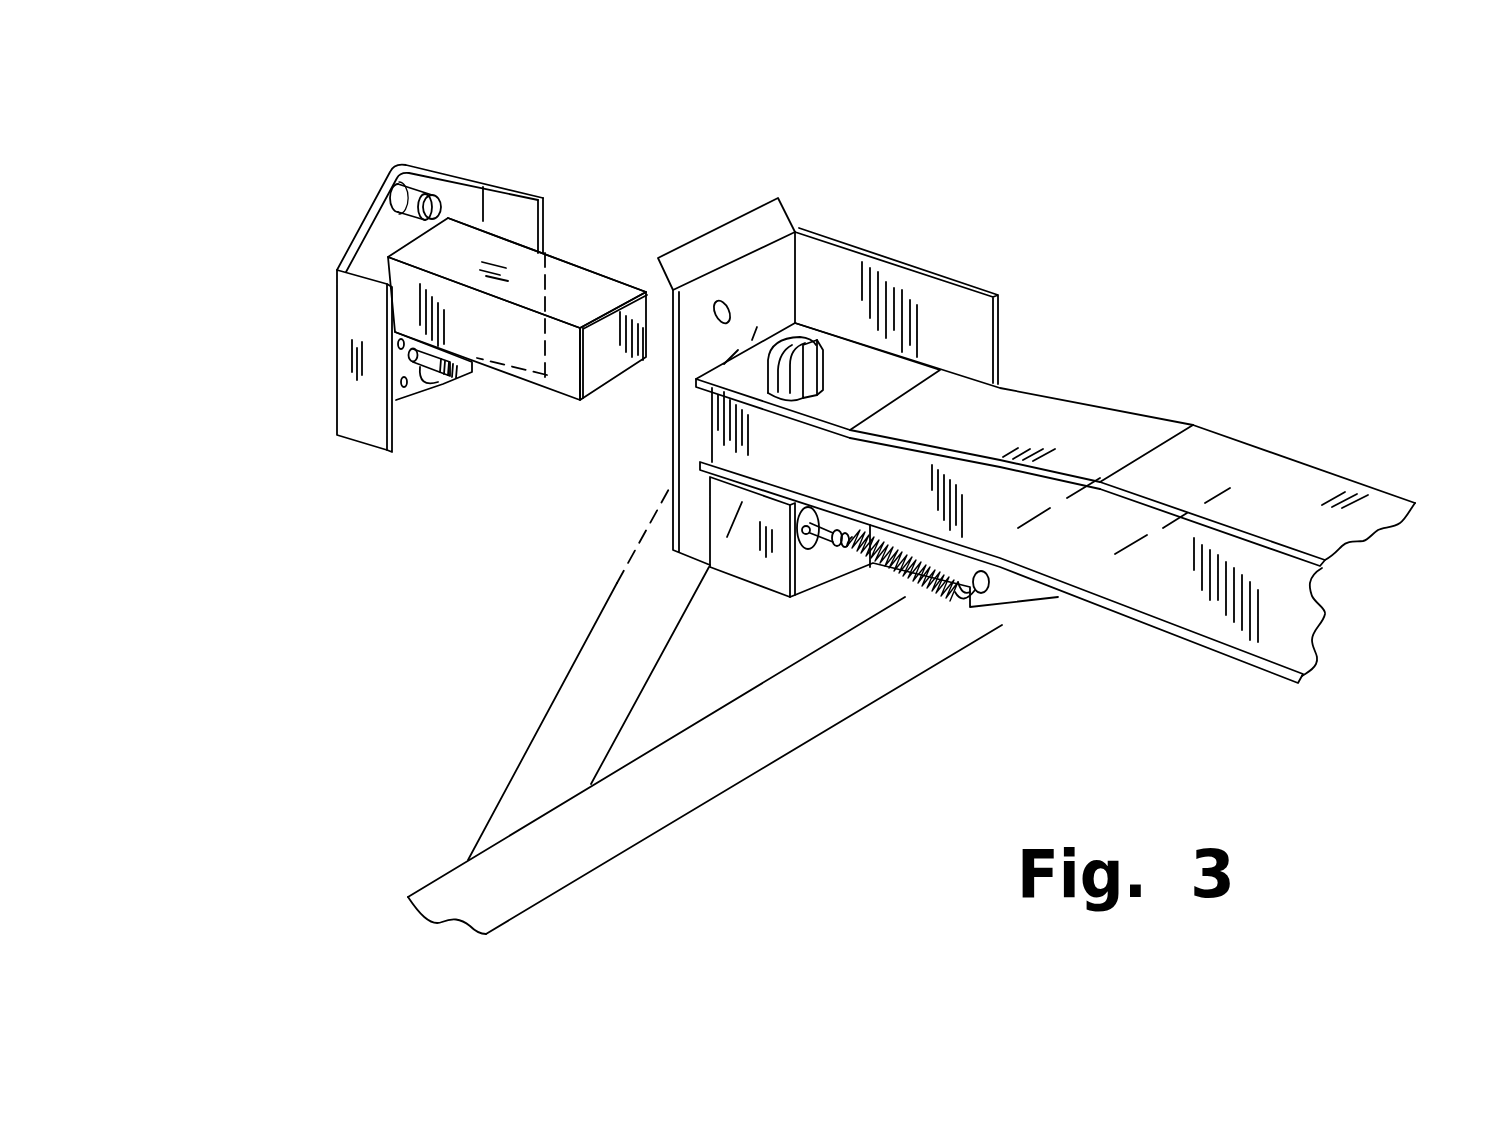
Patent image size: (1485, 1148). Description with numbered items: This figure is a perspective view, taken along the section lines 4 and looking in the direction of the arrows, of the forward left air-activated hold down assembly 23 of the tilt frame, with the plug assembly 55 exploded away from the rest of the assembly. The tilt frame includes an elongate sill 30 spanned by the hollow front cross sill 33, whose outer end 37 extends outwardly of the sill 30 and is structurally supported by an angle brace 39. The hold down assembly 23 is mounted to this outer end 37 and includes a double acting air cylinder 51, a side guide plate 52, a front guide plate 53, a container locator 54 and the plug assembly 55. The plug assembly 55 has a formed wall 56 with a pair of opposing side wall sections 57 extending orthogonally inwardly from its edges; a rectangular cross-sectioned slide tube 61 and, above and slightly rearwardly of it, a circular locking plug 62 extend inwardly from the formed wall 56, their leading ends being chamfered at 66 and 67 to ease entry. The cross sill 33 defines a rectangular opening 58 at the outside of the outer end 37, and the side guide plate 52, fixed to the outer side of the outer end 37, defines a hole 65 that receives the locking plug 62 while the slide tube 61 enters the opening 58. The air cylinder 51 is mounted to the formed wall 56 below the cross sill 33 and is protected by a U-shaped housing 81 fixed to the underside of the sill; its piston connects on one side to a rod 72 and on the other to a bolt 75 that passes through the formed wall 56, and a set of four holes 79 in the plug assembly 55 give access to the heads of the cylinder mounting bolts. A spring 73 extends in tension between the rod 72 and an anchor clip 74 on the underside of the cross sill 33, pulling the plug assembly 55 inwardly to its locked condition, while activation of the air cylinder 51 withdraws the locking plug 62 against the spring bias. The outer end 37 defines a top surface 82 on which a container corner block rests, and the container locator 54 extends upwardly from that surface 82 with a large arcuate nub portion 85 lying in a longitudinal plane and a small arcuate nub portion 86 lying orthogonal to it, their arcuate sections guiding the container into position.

The section lines 4— 4 is at (270, 195).
The air-activated hold down assembly 23 is at (819, 174).
The sill 30 is at (712, 803).
The front cross sill 33 is at (1257, 443).
The outer end of front cross sill 37 is at (927, 380).
The angle brace 39 is at (552, 700).
The double acting air cylinder 51 is at (793, 596).
The side guide plate 52 is at (668, 420).
The front guide plate 53 is at (1000, 342).
The container locator 54 is at (805, 333).
The plug assembly 55 is at (328, 408).
The formed wall 56 is at (468, 188).
The side wall sections 57 is at (375, 432).
The rectangular opening 58 is at (763, 316).
The slide tube 61 is at (587, 263).
The locking plug 62 is at (412, 182).
The hole 65 is at (730, 298).
The chamfer of slide tube 66 is at (627, 300).
The chamfer of locking plug 67 is at (415, 223).
The rod 72 is at (835, 549).
The spring 73 is at (923, 587).
The anchor clip 74 is at (1010, 605).
The bolt 75 is at (445, 382).
The holes 79 is at (398, 350).
The U-shaped housing 81 is at (745, 583).
The top surface 82 is at (883, 400).
The large dimensioned arcuate nub portion 85 is at (796, 399).
The small dimensioned arcuate nub portion 86 is at (823, 343).